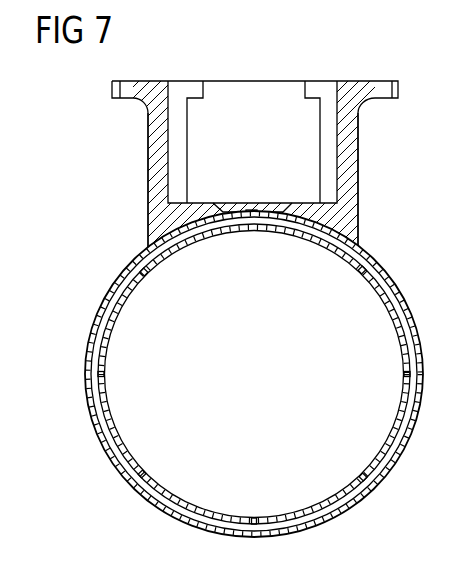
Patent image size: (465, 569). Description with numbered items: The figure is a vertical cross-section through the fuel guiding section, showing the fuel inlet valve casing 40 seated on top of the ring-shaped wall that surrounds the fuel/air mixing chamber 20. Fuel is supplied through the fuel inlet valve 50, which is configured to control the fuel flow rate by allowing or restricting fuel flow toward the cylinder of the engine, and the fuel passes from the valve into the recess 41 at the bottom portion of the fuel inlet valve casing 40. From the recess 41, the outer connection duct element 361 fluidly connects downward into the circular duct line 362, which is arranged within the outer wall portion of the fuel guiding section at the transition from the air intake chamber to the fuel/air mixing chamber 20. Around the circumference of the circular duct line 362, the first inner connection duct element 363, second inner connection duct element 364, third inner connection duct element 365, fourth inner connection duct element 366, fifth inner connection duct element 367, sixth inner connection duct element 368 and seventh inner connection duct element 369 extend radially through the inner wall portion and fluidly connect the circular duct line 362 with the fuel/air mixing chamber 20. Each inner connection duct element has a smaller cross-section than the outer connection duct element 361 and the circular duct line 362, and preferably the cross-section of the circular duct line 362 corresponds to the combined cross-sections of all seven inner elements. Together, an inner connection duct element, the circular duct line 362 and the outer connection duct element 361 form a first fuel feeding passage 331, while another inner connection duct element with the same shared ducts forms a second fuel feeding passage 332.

The fuel/air mixing chamber 20 is at (266, 384).
The fuel inlet valve casing 40 is at (360, 138).
The recess 41 is at (222, 207).
The fuel inlet valve 50 is at (257, 110).
The first fuel feeding passage 331 is at (340, 240).
The second fuel feeding passage 332 is at (172, 238).
The outer connection duct element 361 is at (253, 211).
The circular duct line 362 is at (97, 334).
The first inner connection duct element 363 is at (359, 271).
The second inner connection duct element 364 is at (147, 269).
The third inner connection duct element 365 is at (104, 375).
The fourth inner connection duct element 366 is at (145, 472).
The fifth inner connection duct element 367 is at (253, 518).
The sixth inner connection duct element 368 is at (360, 475).
The seventh inner connection duct element 369 is at (404, 374).